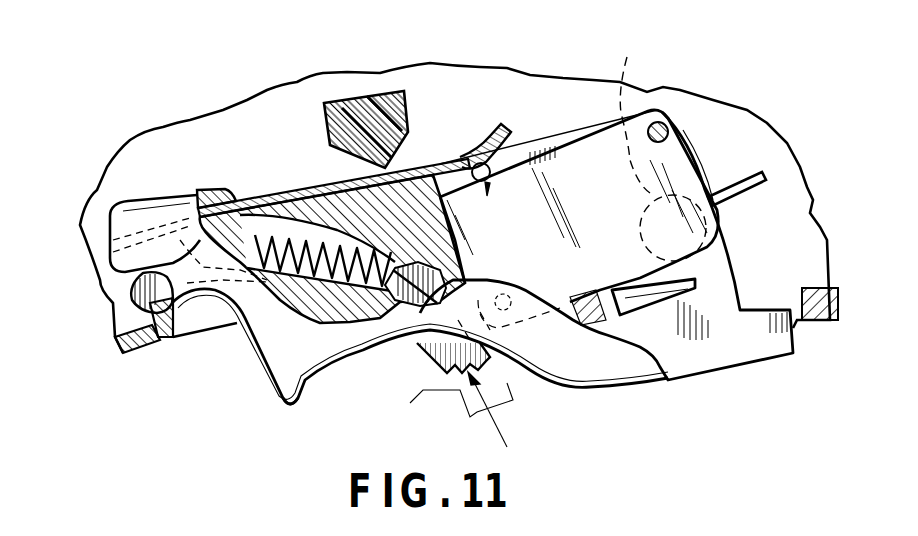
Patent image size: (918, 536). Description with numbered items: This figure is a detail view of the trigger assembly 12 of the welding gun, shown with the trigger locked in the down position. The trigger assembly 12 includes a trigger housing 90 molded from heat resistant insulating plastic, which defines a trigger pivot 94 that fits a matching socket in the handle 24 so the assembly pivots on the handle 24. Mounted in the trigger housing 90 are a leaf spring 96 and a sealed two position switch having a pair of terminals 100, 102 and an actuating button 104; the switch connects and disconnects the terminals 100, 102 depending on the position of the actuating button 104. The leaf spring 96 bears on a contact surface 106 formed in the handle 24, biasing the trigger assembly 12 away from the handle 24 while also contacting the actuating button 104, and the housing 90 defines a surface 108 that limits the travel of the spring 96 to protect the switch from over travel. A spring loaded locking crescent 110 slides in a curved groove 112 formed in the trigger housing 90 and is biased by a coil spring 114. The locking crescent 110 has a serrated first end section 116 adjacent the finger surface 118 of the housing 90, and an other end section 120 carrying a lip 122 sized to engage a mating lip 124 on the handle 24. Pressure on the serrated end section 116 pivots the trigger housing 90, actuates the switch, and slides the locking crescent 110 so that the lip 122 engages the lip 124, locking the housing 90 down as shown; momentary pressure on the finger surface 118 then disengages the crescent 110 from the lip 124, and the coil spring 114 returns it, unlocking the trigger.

The trigger assembly 12 is at (288, 410).
The welding gun handle 24 is at (790, 258).
The trigger housing 90 is at (565, 360).
The trigger pivot 94 is at (661, 146).
The leaf spring 96 is at (445, 125).
The terminal 100 is at (575, 185).
The terminal 102 is at (715, 197).
The actuating button 104 is at (504, 125).
The contact surface 106 is at (363, 114).
The surface 108 is at (390, 108).
The locking crescent 110 is at (263, 360).
The curved groove 112 is at (283, 245).
The coil spring 114 is at (314, 237).
The first end section 116 is at (372, 320).
The finger surface 118 is at (347, 362).
The other end section 120 is at (187, 317).
The lip 122 is at (115, 315).
The mating lip 124 is at (165, 342).